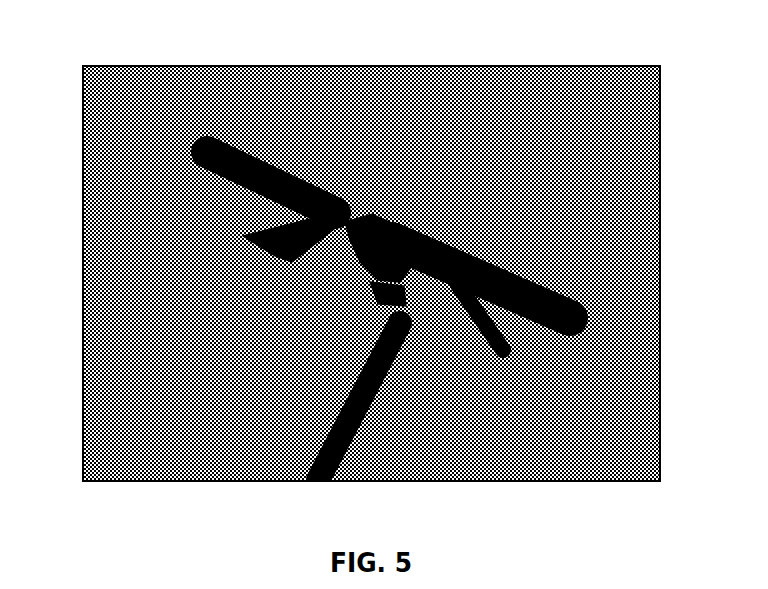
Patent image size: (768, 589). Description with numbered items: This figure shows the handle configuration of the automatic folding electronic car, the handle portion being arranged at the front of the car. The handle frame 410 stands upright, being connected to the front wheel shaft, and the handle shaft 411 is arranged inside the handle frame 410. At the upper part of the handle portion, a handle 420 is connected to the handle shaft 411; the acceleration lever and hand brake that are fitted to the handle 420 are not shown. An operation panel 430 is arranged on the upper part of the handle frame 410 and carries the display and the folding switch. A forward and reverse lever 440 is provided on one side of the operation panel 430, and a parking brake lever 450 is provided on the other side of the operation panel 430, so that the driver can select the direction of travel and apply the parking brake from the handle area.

The handle frame 410 is at (295, 375).
The handle shaft 411 is at (216, 381).
The handle 420 is at (425, 228).
The operation panel 430 is at (352, 225).
The forward and reverse lever 440 is at (480, 340).
The parking brake lever 450 is at (245, 243).